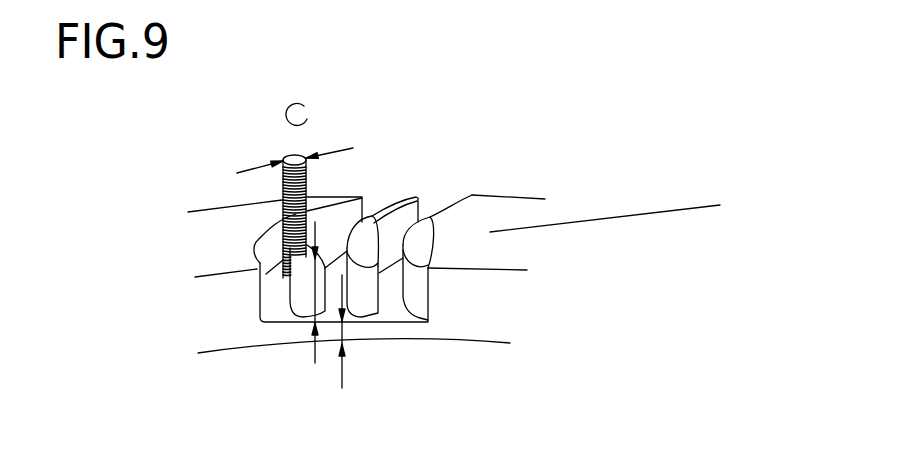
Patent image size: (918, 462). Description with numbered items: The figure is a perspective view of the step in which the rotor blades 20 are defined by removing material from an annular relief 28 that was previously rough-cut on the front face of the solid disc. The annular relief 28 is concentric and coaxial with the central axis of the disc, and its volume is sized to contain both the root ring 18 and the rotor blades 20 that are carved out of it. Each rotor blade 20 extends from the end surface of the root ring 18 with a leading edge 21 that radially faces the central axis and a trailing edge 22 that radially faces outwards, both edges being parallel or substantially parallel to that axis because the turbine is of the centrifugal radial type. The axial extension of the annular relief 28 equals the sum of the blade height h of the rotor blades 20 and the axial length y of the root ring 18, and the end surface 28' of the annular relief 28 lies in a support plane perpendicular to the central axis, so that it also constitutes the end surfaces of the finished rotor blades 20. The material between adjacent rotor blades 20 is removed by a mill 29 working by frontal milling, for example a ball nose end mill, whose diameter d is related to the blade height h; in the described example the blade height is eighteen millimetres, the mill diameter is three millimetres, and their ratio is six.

The root ring 18 is at (258, 333).
The rotor blade 20 is at (413, 193).
The leading edge 21 is at (373, 290).
The trailing edge 22 is at (418, 223).
The annular relief 28 is at (363, 221).
The end surface 28' is at (630, 213).
The mill 29 is at (283, 192).
The diameter of the mill d is at (290, 162).
The blade height h is at (324, 258).
The axial length of the root ring y is at (347, 332).